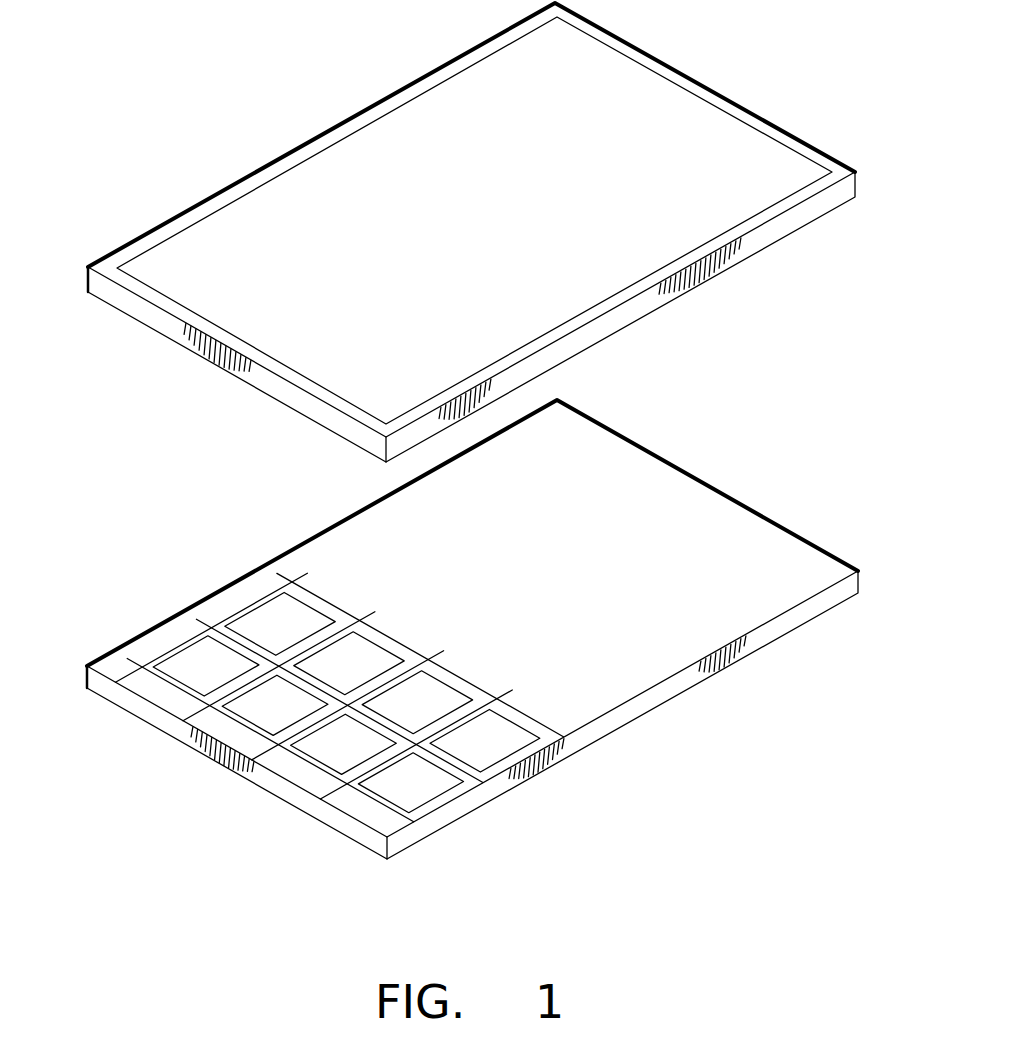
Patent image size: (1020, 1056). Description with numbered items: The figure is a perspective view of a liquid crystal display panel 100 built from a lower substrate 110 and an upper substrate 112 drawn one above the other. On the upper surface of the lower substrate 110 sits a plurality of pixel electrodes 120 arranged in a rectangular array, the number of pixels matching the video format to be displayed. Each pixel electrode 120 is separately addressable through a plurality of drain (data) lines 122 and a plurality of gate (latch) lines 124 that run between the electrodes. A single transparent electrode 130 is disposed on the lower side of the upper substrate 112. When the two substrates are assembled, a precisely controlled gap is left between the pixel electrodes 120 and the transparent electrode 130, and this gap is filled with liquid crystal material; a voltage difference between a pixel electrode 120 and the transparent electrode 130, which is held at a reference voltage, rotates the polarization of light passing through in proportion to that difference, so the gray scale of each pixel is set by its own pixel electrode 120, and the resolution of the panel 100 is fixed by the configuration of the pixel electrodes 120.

The liquid crystal display panel 100 is at (158, 170).
The lower substrate 110 is at (700, 668).
The upper substrate 112 is at (855, 172).
The pixel electrodes 120 is at (313, 620).
The drain (data) lines 122 is at (200, 756).
The gate (latch) lines 124 is at (547, 733).
The transparent electrode 130 is at (353, 152).